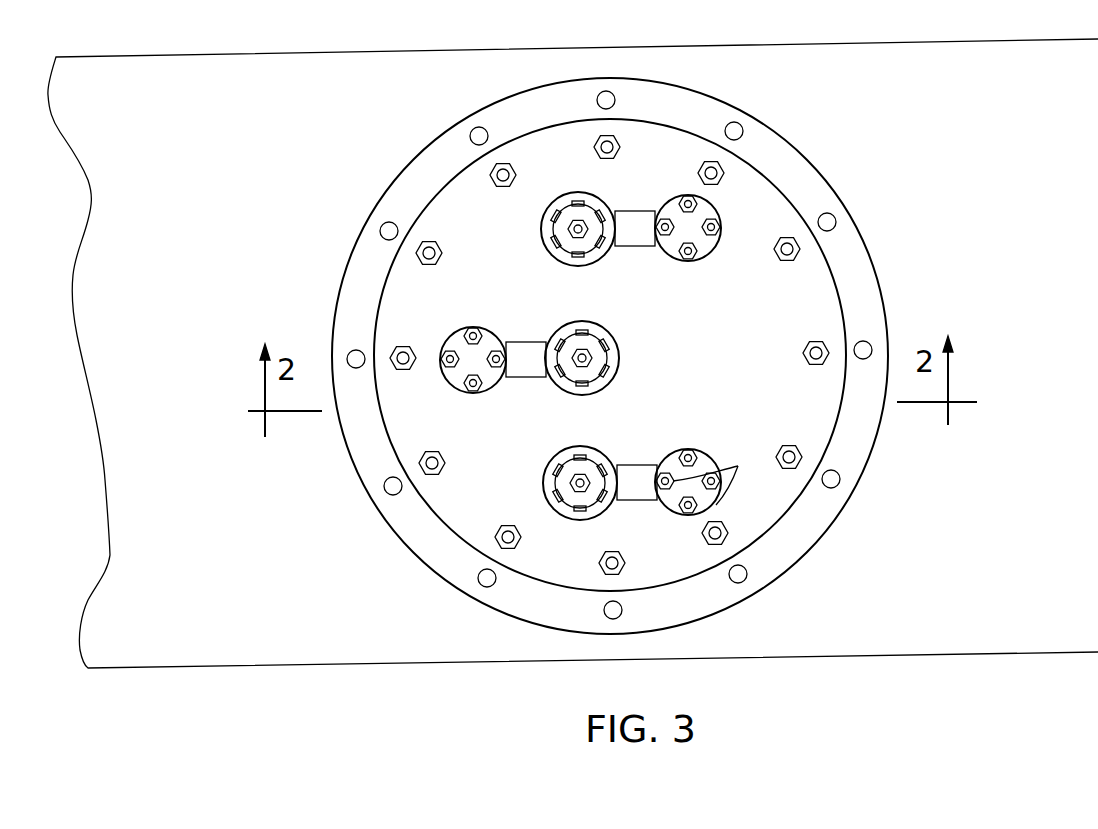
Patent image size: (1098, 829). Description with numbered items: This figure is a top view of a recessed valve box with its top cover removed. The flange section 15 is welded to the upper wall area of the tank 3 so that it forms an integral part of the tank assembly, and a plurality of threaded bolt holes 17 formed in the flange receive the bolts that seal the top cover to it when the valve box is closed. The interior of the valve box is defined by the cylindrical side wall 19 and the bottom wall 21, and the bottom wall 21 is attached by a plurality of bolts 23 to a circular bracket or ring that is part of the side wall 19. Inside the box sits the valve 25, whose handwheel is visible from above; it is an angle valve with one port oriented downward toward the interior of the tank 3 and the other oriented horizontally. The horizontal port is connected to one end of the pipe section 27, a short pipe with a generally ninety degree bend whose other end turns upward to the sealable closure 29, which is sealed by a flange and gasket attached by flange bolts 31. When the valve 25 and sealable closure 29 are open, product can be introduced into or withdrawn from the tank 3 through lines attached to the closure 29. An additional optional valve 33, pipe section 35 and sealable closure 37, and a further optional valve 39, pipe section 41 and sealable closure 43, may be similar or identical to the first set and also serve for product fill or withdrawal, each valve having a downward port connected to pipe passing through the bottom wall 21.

The tank 3 is at (337, 73).
The flange section 15 is at (543, 108).
The threaded bolt holes 17 is at (743, 131).
The cylindrical side wall 19 is at (838, 408).
The bottom wall 21 is at (714, 360).
The bolts 23 is at (397, 370).
The valve 25 is at (572, 450).
The pipe section 27 is at (645, 465).
The sealable closure 29 is at (700, 460).
The flange bolts 31 is at (720, 479).
The valve 33 is at (583, 323).
The pipe section 35 is at (533, 342).
The sealable closure 37 is at (472, 324).
The valve 39 is at (580, 192).
The pipe section 41 is at (638, 210).
The sealable closure 43 is at (695, 262).